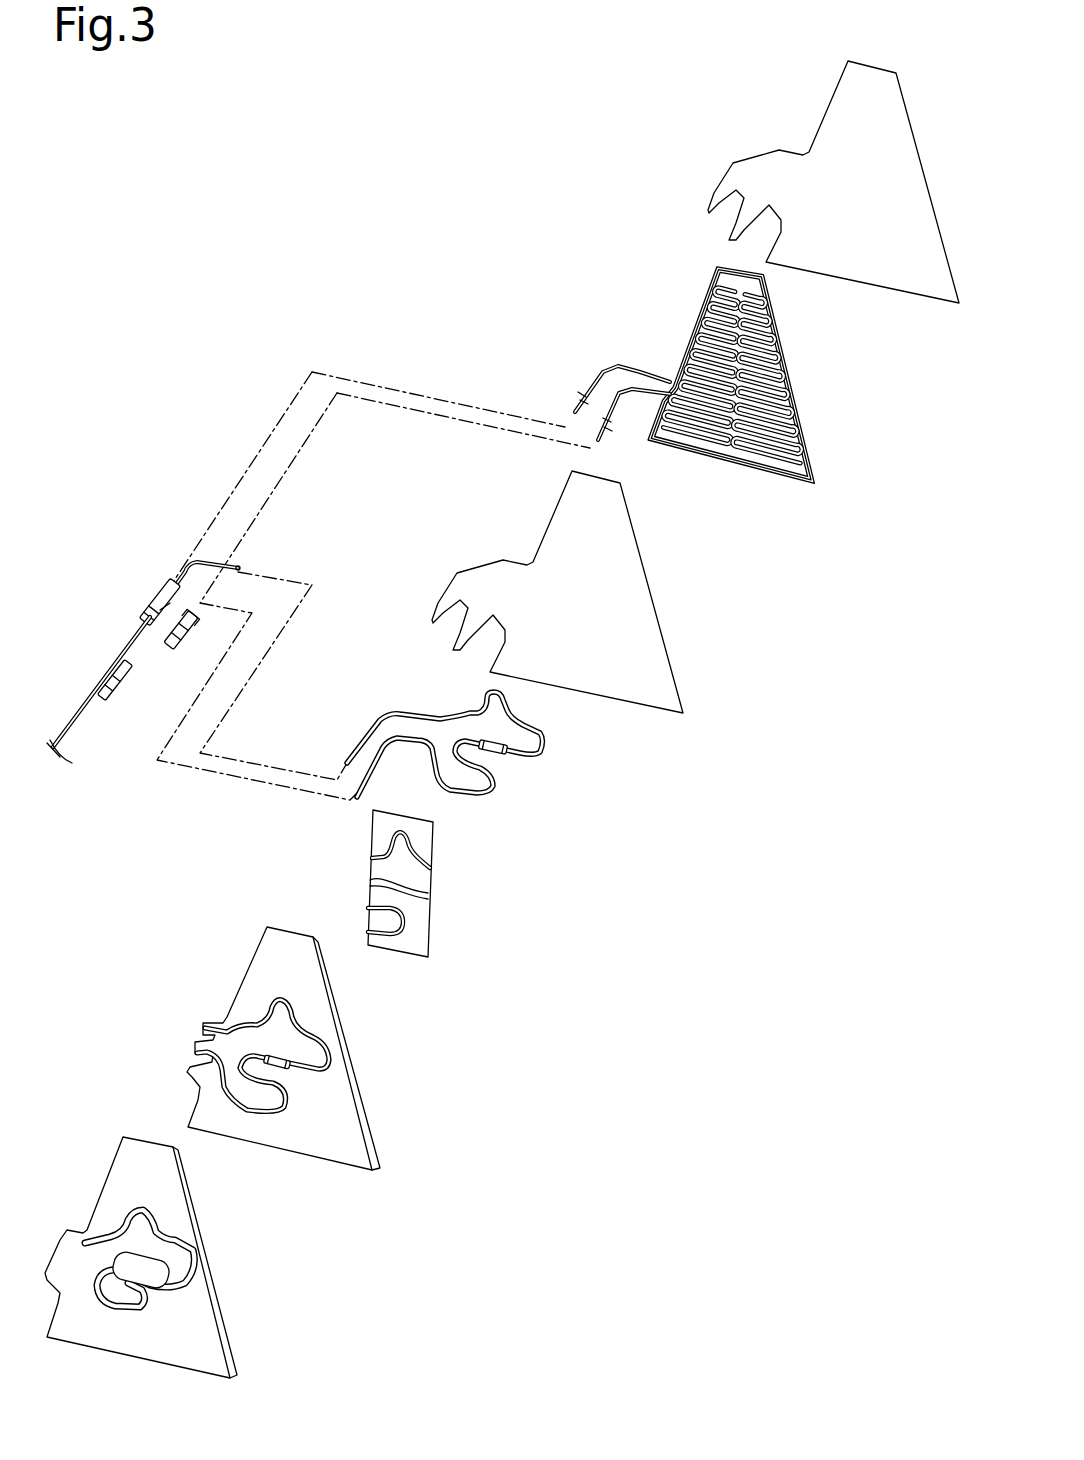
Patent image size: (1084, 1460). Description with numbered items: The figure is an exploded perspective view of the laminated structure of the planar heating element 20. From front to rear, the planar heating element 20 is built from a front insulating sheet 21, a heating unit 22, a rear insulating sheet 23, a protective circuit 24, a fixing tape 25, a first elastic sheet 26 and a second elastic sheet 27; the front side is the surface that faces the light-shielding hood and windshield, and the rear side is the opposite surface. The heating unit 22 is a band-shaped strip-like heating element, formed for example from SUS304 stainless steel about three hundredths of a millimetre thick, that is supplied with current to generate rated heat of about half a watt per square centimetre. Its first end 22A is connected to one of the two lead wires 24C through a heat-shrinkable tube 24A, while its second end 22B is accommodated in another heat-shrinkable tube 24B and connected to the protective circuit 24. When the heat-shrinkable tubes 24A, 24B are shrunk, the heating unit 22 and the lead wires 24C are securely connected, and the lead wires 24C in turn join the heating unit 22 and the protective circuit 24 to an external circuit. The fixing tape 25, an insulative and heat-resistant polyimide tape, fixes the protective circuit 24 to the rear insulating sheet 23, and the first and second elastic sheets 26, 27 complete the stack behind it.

The planar heating element 20 is at (364, 263).
The front insulating sheet 21 is at (820, 118).
The heating unit 22 is at (787, 368).
The first end 22A is at (590, 383).
The second end 22B is at (610, 433).
The rear insulating sheet 23 is at (655, 593).
The protective circuit 24 is at (547, 740).
The heat-shrinkable tube 24A is at (150, 607).
The heat-shrinkable tube 24B is at (180, 657).
The lead wires 24C is at (77, 717).
The fixing tape 25 is at (437, 845).
The first elastic sheet 26 is at (368, 1107).
The second elastic sheet 27 is at (230, 1333).